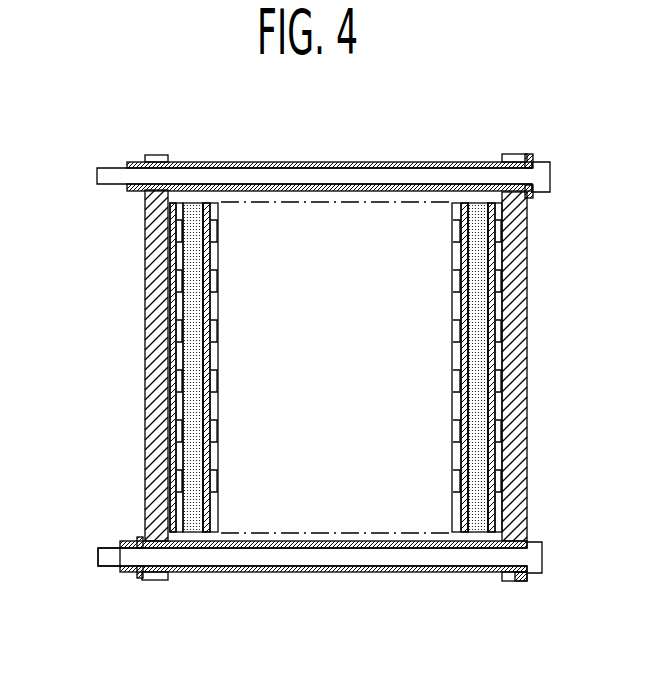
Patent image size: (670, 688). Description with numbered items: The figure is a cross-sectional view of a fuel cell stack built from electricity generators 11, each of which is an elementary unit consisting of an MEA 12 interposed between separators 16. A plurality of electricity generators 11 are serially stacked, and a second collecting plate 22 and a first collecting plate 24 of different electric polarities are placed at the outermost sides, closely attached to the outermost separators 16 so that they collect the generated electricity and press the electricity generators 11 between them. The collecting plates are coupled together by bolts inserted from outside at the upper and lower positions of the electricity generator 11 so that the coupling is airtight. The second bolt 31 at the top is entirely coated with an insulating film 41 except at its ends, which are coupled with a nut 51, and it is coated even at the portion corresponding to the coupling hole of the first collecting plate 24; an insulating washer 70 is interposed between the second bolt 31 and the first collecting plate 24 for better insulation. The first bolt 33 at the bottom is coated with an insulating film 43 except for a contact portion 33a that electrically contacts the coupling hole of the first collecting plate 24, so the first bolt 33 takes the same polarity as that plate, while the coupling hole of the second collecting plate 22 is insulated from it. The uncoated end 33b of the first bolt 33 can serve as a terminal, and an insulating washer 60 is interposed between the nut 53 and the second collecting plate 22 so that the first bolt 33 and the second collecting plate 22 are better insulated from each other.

The electricity generator 11 is at (326, 442).
The MEA 12 is at (195, 534).
The separator 16 is at (177, 534).
The second collecting plate 22 is at (150, 300).
The first collecting plate 24 is at (523, 305).
The second bolt 31 is at (542, 178).
The first bolt 33 is at (537, 555).
The contact portion 33a is at (520, 588).
The end of the first bolt 33b is at (100, 558).
The insulating film 41 is at (350, 162).
The insulating film 43 is at (352, 573).
The nut 51 is at (131, 163).
The nut 53 is at (122, 542).
The insulating washer 60 is at (130, 582).
The insulating washer 70 is at (533, 157).